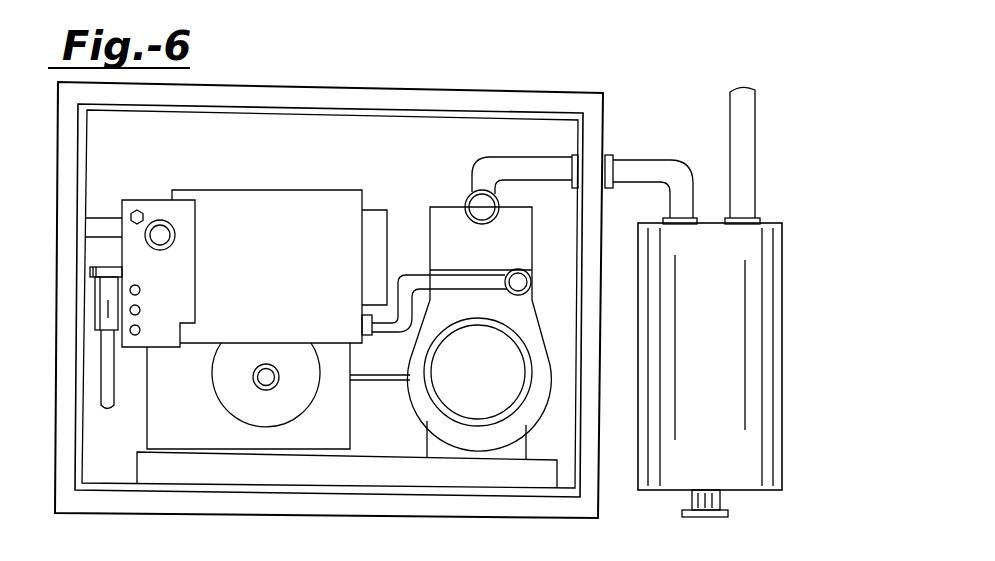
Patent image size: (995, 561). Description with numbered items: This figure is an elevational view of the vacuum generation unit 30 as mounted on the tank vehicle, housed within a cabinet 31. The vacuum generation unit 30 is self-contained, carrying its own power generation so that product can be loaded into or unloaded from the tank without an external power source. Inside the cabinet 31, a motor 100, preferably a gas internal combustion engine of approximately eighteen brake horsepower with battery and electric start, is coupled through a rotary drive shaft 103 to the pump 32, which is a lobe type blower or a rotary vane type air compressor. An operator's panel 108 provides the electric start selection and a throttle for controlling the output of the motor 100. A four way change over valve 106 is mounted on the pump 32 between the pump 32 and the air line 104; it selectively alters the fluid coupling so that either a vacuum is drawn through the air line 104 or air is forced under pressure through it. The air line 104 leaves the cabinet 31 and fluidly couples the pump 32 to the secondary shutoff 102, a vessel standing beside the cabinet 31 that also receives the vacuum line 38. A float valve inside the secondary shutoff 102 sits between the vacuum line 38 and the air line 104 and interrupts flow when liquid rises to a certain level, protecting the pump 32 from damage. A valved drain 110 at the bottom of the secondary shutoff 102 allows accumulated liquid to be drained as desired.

The vacuum generation unit 30 is at (368, 136).
The cabinet 31 is at (401, 88).
The pump 32 is at (488, 423).
The vacuum lines 38 is at (758, 165).
The motor 100 is at (245, 188).
The secondary shutoff 102 is at (784, 333).
The rotary drive shaft 103 is at (365, 383).
The air line 104 is at (645, 160).
The four way change over valve 106 is at (447, 206).
The operator's panel 108 is at (197, 272).
The valved drain 110 is at (708, 517).